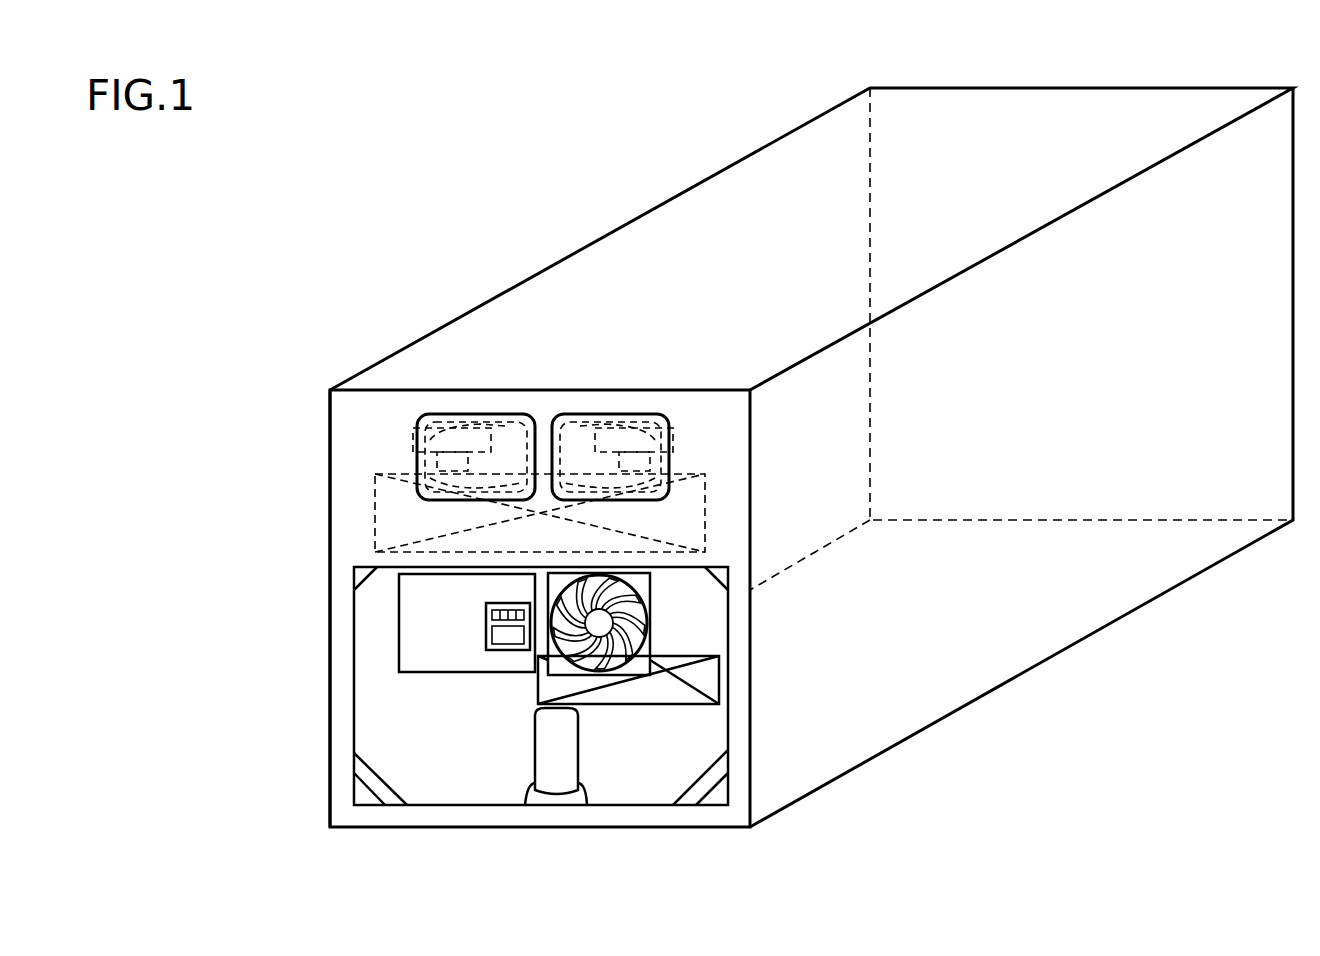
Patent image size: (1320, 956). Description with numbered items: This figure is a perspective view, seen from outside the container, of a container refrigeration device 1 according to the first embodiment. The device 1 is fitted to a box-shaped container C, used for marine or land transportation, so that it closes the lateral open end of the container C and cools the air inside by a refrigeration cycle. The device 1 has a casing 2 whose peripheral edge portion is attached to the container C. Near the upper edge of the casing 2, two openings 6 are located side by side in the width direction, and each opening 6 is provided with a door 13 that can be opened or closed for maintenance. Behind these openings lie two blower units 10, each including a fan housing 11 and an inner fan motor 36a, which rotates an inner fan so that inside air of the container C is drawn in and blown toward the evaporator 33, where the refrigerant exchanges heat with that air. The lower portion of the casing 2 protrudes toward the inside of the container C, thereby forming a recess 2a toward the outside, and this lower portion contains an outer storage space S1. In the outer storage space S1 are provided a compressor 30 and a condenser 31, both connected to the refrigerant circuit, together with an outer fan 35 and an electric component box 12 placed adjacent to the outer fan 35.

The container refrigeration device 1 is at (362, 338).
The container C is at (596, 246).
The casing 2 is at (326, 508).
The recess 2a is at (725, 735).
The opening 6 is at (500, 427).
The blower unit 10 is at (405, 428).
The fan housing 11 is at (413, 440).
The electric component box 12 is at (400, 620).
The door 13 is at (446, 414).
The compressor 30 is at (538, 732).
The condenser 31 is at (719, 682).
The evaporator 33 is at (705, 513).
The outer fan 35 is at (650, 612).
The inner fan motor 36a is at (440, 480).
The outer storage space S1 is at (394, 712).